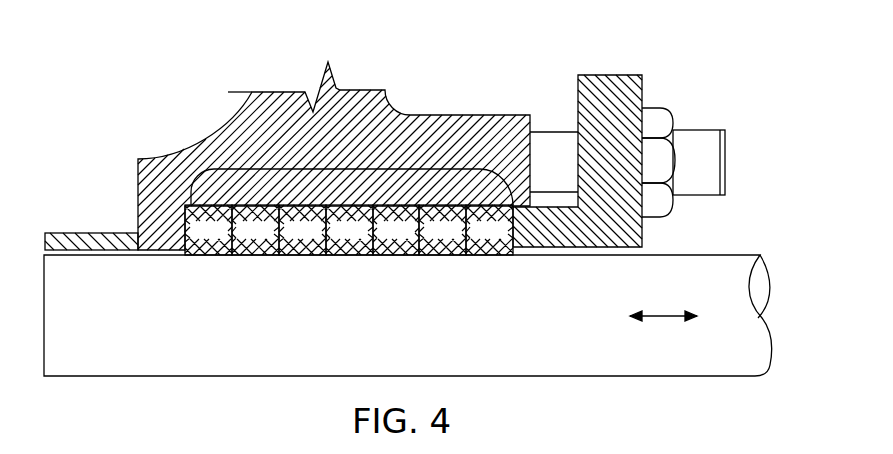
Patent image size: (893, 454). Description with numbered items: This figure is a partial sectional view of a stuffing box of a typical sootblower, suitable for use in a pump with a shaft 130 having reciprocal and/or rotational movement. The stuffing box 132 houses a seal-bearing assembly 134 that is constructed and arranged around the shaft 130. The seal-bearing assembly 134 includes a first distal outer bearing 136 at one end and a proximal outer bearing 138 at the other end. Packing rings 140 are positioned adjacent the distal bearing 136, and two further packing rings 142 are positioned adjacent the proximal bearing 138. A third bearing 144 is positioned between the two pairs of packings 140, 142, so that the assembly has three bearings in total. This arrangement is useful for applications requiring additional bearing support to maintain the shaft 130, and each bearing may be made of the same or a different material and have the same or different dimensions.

The shaft 130 is at (733, 267).
The stuffing box 132 is at (463, 123).
The seal-bearing assembly 134 is at (357, 168).
The first distal outer bearing 136 is at (208, 230).
The proximal outer bearing 138 is at (489, 230).
The packing rings 140 is at (279, 230).
The packing rings 142 is at (419, 230).
The third bearing 144 is at (349, 230).